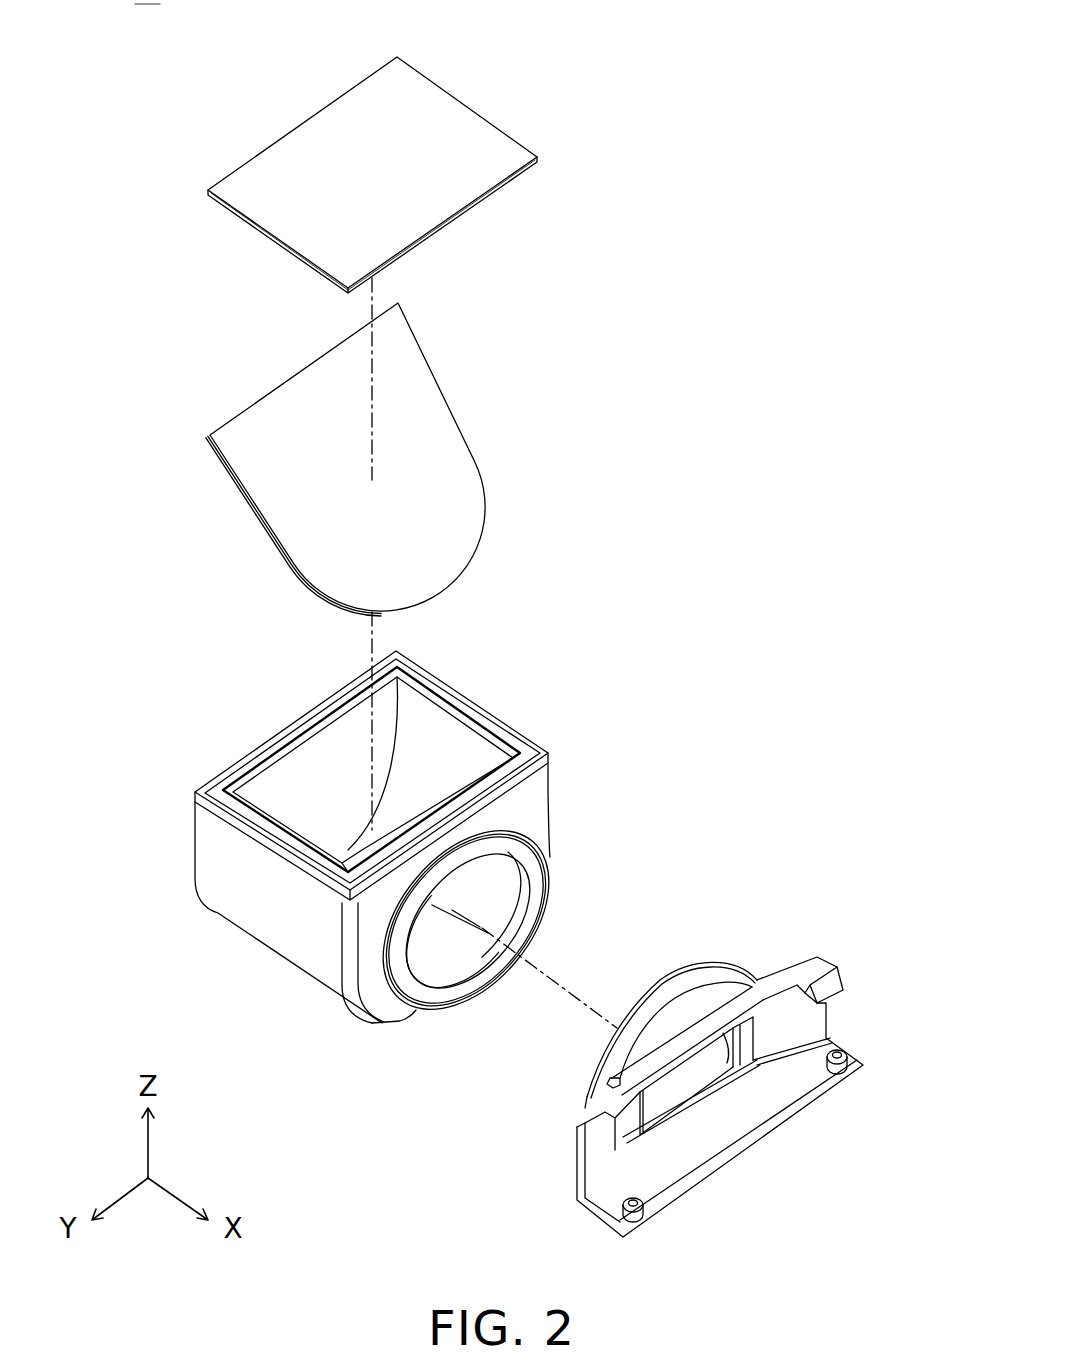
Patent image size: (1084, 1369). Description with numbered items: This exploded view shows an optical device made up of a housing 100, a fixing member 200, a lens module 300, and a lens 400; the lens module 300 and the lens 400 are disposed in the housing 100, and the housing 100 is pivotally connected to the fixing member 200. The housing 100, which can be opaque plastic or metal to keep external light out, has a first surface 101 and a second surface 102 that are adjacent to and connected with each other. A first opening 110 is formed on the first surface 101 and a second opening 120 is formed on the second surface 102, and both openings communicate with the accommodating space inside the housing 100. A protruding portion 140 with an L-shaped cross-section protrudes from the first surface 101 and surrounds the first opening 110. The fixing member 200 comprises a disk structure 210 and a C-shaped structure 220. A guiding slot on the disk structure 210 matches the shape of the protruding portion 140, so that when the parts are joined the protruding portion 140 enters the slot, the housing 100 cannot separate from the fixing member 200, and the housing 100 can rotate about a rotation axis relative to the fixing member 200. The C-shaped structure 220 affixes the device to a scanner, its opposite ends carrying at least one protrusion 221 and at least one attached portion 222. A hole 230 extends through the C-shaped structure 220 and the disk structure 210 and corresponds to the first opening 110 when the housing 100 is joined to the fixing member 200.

The housing 100 is at (270, 913).
The first surface 101 is at (533, 805).
The second surface 102 is at (517, 747).
The first opening 110 is at (483, 888).
The second opening 120 is at (453, 713).
The protruding portion 140 is at (440, 1003).
The fixing member 200 is at (450, 1102).
The disk structure 210 is at (605, 1056).
The C-shaped structure 220 is at (580, 1176).
The protrusion 221 is at (838, 1070).
The attached portion 222 is at (828, 990).
The hole 230 is at (683, 1077).
The lens module 300 is at (438, 445).
The lens 400 is at (330, 147).